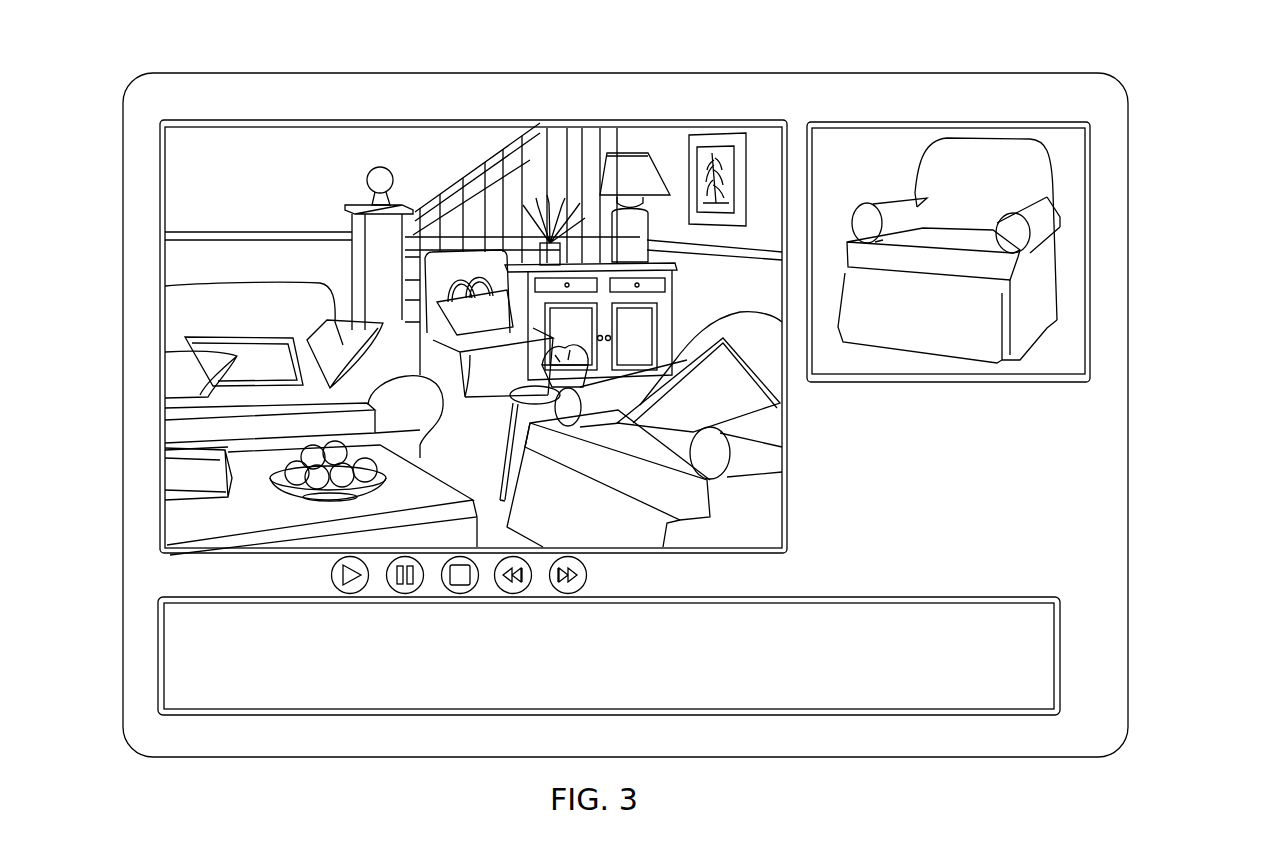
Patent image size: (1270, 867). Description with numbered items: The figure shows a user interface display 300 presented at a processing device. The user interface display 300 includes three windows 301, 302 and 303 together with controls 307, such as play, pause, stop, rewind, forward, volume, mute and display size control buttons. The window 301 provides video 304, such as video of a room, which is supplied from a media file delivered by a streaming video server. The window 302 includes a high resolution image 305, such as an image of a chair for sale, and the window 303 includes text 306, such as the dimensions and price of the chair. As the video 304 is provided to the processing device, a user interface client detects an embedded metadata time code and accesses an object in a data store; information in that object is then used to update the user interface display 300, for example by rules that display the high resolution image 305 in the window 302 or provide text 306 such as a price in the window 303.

The user interface display 300 is at (1108, 74).
The window 301 is at (417, 292).
The window 302 is at (1015, 284).
The window 303 is at (684, 704).
The video 304 is at (430, 215).
The high resolution image 305 is at (1040, 263).
The text 306 is at (670, 662).
The controls 307 is at (330, 564).